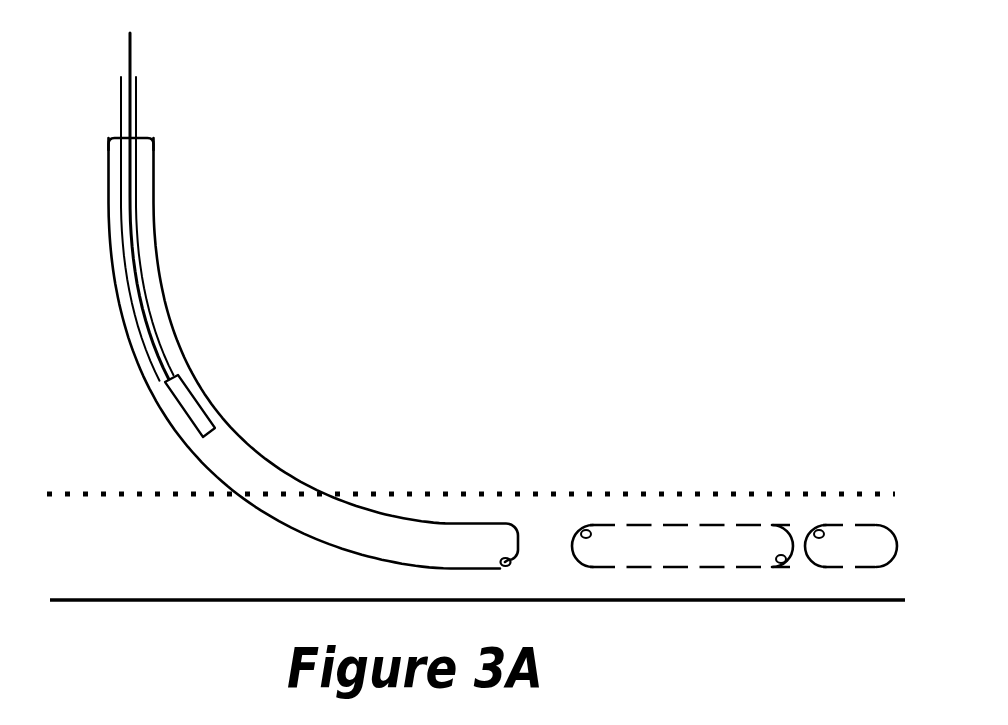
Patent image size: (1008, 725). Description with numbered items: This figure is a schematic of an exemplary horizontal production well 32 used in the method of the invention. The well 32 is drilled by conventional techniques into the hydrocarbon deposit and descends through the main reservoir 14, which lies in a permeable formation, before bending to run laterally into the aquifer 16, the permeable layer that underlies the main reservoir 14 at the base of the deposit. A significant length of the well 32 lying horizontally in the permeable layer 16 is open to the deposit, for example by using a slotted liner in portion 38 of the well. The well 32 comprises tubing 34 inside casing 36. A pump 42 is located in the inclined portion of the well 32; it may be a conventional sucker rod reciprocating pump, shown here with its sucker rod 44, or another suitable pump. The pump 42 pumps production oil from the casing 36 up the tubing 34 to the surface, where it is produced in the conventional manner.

The main reservoir 14 is at (502, 320).
The aquifer 16 is at (165, 568).
The horizontal production well 32 is at (101, 292).
The tubing 34 is at (138, 104).
The casing 36 is at (155, 196).
The slotted liner portion 38 is at (731, 493).
The pump 42 is at (183, 412).
The sucker rod 44 is at (128, 62).